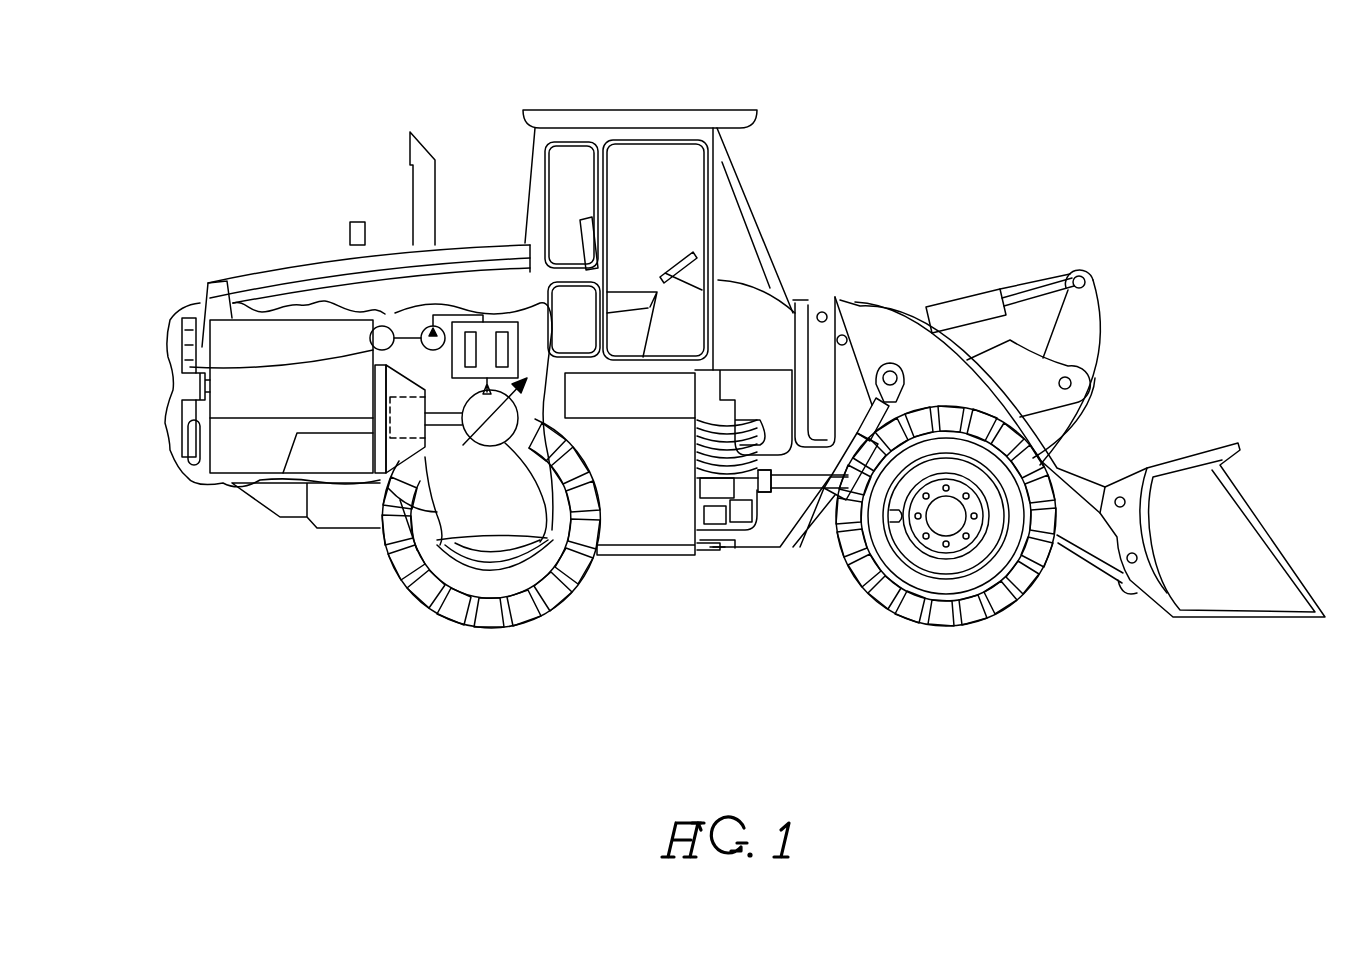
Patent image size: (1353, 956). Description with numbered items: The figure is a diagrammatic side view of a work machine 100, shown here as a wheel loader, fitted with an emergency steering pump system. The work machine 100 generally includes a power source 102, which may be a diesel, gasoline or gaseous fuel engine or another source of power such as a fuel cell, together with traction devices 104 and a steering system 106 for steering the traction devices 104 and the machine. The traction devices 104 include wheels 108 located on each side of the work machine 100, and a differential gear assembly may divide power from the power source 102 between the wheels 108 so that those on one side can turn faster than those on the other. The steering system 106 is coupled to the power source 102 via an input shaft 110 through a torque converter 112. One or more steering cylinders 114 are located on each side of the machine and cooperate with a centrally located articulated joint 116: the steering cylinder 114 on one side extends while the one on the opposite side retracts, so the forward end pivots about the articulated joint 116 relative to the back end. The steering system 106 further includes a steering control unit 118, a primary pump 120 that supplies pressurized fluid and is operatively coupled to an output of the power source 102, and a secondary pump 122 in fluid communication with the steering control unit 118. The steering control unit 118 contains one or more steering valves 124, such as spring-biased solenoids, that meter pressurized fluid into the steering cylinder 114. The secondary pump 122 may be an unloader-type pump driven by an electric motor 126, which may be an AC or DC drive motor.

The work machine 100 is at (1193, 120).
The power source 102 is at (300, 402).
The traction devices 104 is at (374, 594).
The steering system 106 is at (371, 172).
The wheels 108 is at (535, 620).
The input shaft 110 is at (452, 427).
The torque converter 112 is at (417, 550).
The steering cylinder 114 is at (790, 492).
The articulated joint 116 is at (713, 557).
The steering control unit 118 is at (203, 368).
The primary pump 120 is at (555, 565).
The secondary pump 122 is at (433, 326).
The steering valve 124 is at (502, 332).
The electric motor 126 is at (382, 326).